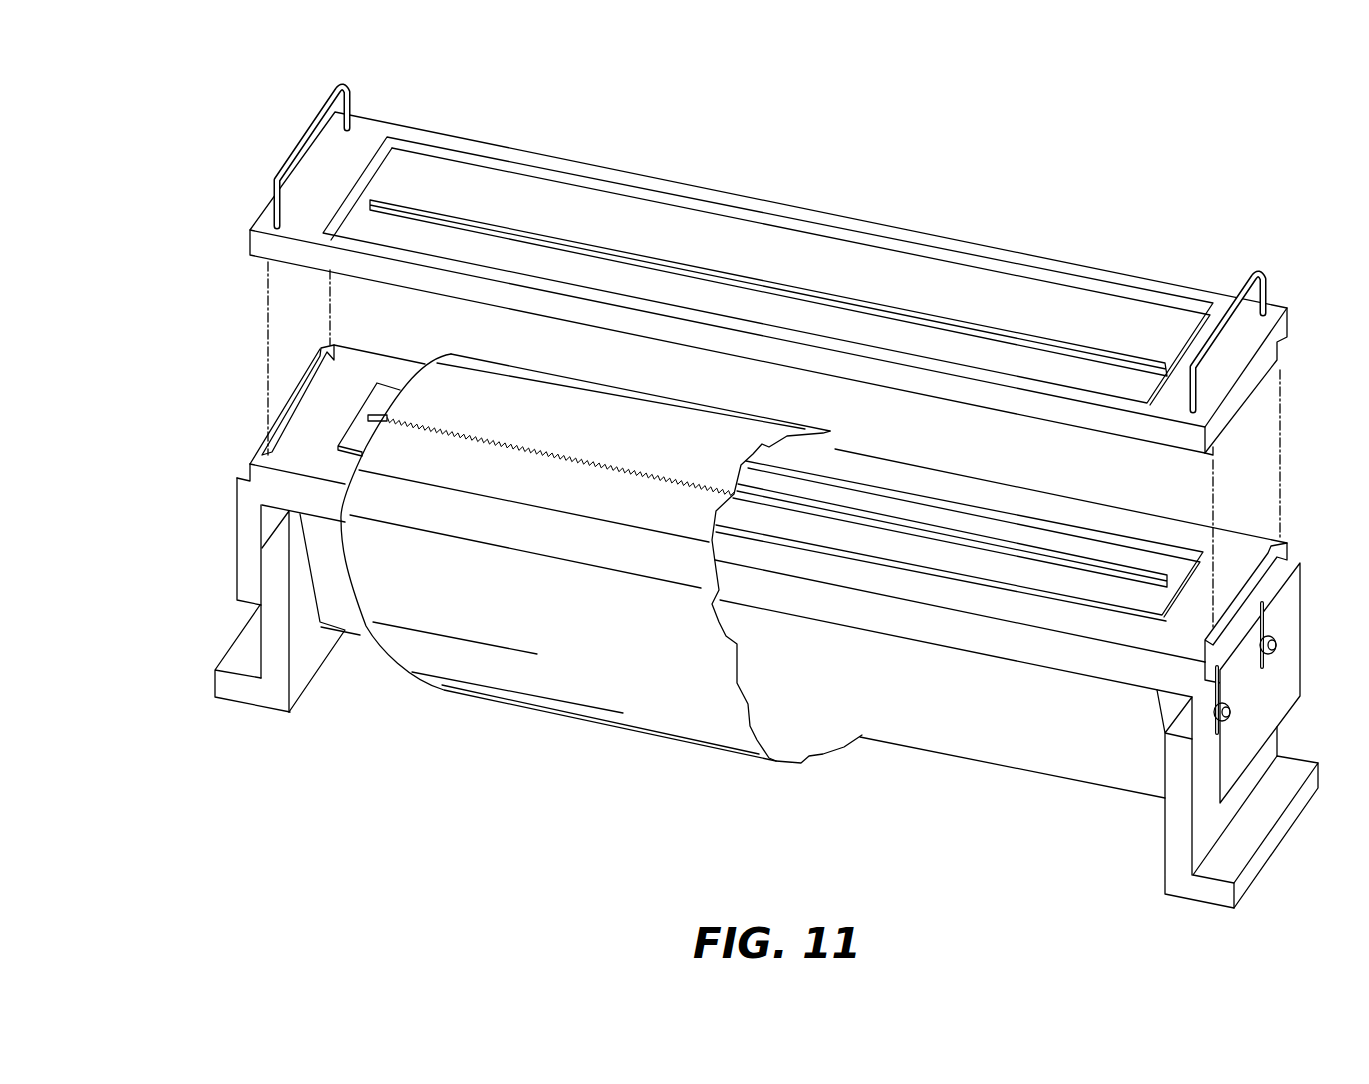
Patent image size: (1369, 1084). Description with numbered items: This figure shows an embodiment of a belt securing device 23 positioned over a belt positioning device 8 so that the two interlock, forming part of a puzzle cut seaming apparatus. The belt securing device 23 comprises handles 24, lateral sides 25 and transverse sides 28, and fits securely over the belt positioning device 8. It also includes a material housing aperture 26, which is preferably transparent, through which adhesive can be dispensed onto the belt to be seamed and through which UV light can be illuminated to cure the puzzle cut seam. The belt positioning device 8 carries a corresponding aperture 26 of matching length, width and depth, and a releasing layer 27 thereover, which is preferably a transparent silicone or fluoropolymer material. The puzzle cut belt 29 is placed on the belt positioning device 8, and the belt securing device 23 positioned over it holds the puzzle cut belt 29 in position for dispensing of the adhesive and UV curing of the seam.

The belt positioning device 8 is at (236, 467).
The belt securing device 23 is at (205, 200).
The handles 24 is at (312, 122).
The lateral sides 25 is at (672, 345).
The material housing aperture 26 is at (873, 300).
The releasing layer 27 is at (1058, 530).
The transverse sides 28 is at (1275, 352).
The puzzle cut belt 29 is at (555, 712).